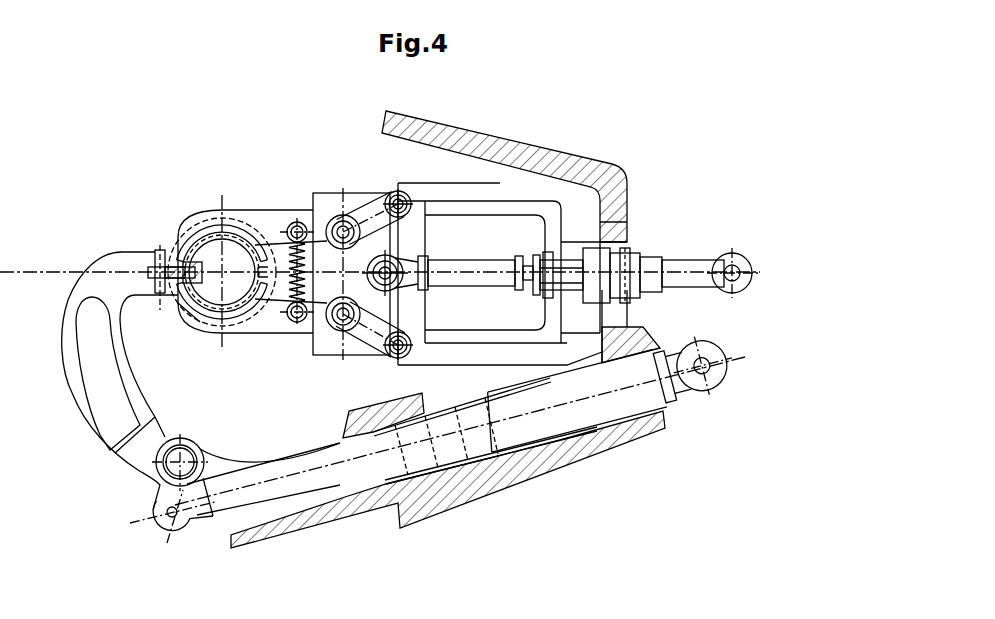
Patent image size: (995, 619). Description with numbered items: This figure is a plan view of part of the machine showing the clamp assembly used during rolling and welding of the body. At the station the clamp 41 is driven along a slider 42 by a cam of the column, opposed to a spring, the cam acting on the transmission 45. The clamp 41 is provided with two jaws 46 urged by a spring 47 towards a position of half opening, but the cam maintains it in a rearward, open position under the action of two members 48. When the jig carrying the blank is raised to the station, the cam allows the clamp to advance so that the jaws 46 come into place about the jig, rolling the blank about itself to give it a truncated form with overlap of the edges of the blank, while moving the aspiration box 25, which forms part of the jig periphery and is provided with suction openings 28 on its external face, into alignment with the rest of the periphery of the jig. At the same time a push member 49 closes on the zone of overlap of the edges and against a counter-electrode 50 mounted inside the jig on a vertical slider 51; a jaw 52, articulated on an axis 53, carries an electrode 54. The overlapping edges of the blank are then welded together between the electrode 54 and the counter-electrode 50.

The box 25 is at (242, 248).
The suction openings 28 is at (268, 240).
The clamp 41 is at (331, 206).
The slider 42 is at (478, 212).
The transmission 45 is at (622, 265).
The jaws 46 is at (275, 325).
The spring 47 is at (283, 281).
The members 48 is at (530, 195).
The push member 49 is at (544, 420).
The counter-electrode 50 is at (190, 252).
The vertical slider 51 is at (186, 303).
The jaw 52 is at (112, 410).
The axis 53 is at (187, 468).
The electrode 54 is at (176, 256).